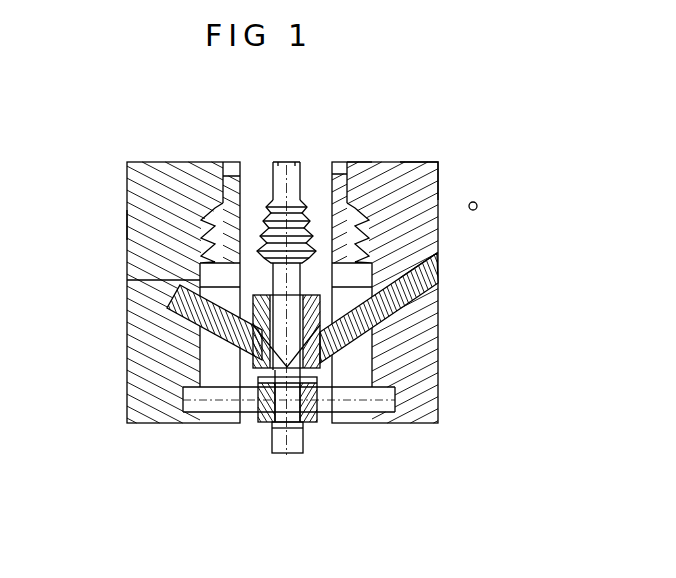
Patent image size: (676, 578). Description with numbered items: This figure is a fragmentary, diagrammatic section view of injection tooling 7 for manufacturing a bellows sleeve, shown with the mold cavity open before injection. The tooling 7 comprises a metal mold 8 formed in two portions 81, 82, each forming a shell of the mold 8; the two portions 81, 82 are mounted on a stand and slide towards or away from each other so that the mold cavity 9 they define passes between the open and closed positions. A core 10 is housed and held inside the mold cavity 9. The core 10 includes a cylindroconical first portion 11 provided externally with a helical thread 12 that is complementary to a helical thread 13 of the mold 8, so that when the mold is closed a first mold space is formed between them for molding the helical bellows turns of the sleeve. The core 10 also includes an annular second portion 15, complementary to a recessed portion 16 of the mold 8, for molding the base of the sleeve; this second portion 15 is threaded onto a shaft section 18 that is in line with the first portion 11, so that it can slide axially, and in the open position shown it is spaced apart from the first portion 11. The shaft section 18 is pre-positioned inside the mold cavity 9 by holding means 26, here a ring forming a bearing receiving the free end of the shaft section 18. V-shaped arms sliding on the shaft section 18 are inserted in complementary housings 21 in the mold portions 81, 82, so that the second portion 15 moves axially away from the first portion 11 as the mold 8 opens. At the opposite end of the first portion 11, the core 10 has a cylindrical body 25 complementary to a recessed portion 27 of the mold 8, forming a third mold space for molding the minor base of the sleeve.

The tooling 7 is at (486, 195).
The mold 8 is at (116, 227).
The mold portion 81 is at (430, 327).
The mold portion 82 is at (135, 342).
The mold cavity 9 is at (215, 185).
The core 10 is at (309, 267).
The first portion 11 is at (332, 198).
The helical thread 12 is at (265, 207).
The helical thread 13 is at (438, 161).
The second portion 15 is at (410, 285).
The recessed portion 16 is at (437, 253).
The shaft section 18 is at (127, 280).
The housings 21 is at (422, 278).
The cylindrical body 25 is at (290, 165).
The holding means 26 is at (263, 415).
The recessed portion 27 is at (372, 160).